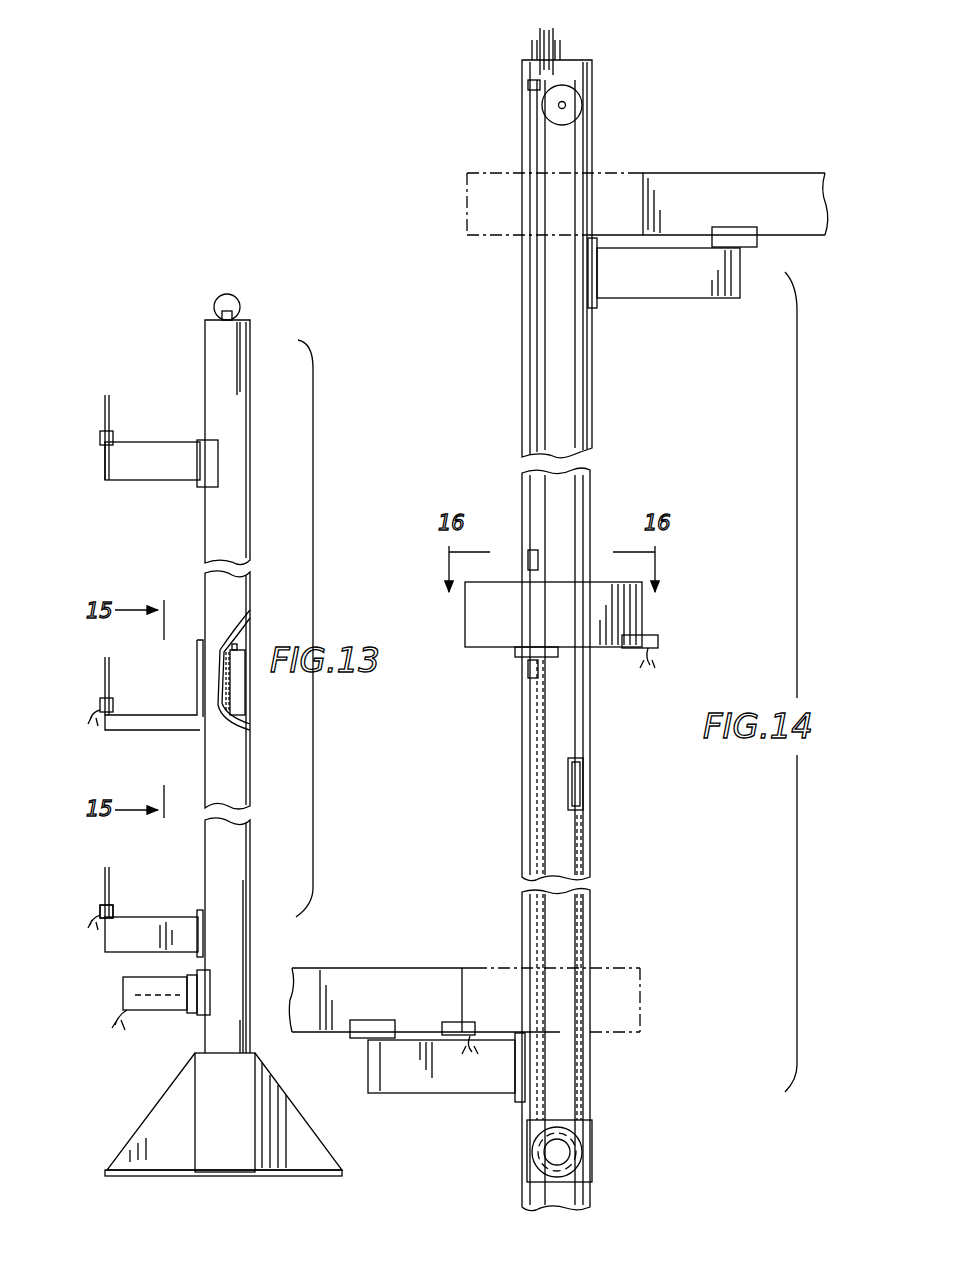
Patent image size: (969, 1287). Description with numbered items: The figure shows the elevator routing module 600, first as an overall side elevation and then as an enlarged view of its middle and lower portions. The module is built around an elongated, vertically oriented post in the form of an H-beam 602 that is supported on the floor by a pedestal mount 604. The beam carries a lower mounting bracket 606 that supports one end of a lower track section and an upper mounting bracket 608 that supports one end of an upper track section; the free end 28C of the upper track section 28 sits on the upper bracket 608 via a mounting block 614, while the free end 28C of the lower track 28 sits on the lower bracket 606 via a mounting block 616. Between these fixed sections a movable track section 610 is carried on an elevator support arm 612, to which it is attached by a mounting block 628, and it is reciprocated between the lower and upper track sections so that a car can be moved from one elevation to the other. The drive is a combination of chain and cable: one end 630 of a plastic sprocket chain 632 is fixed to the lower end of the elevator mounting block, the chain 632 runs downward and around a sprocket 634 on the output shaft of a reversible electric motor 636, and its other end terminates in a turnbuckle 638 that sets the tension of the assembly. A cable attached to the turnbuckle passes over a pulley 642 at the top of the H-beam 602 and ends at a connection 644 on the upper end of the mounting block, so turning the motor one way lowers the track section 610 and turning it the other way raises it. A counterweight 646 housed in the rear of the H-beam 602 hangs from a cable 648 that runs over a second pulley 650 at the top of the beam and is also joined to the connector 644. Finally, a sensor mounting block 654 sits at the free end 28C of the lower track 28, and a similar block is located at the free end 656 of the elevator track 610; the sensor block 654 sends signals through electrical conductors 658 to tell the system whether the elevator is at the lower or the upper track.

In FIG. 13, the track section 28 is at (108, 400).
In FIG. 14, the track section 28 is at (806, 212).
In FIG. 14, the free end of track section 28C is at (657, 177).
In FIG. 13, the elevator routing module 600 is at (266, 446).
In FIG. 13, the H-beam 602 is at (252, 500).
In FIG. 14, the H-beam 602 is at (592, 480).
In FIG. 13, the pedestal mount 604 is at (300, 1168).
In FIG. 13, the lower mounting bracket 606 is at (190, 915).
In FIG. 14, the lower mounting bracket 606 is at (402, 1080).
In FIG. 13, the upper mounting bracket 608 is at (165, 447).
In FIG. 14, the upper mounting bracket 608 is at (686, 288).
In FIG. 13, the movable track section 610 is at (135, 650).
In FIG. 14, the movable track section 610 is at (640, 170).
In FIG. 13, the elevator support arm 612 is at (163, 730).
In FIG. 14, the mounting block 614 is at (756, 206).
In FIG. 13, the mounting block 616 is at (160, 893).
In FIG. 14, the mounting block 616 is at (362, 1032).
In FIG. 13, the mounting block 628 is at (110, 703).
In FIG. 14, the mounting block 628 is at (528, 652).
In FIG. 14, the end of sprocket chain 630 is at (530, 672).
In FIG. 14, the sprocket chain 632 is at (548, 738).
In FIG. 14, the sprocket 634 is at (586, 1146).
In FIG. 13, the reversible electric motor 636 is at (148, 1003).
In FIG. 14, the reversible electric motor 636 is at (588, 1178).
In FIG. 14, the turnbuckle 638 is at (585, 800).
In FIG. 14, the pulley 642 is at (578, 100).
In FIG. 14, the connection 644 is at (556, 582).
In FIG. 13, the counterweight 646 is at (245, 702).
In FIG. 13, the cable 648 is at (250, 640).
In FIG. 14, the cable 648 is at (540, 90).
In FIG. 13, the pulley 650 is at (236, 306).
In FIG. 14, the pulley 650 is at (553, 50).
In FIG. 14, the sensor mounting block 654 is at (660, 644).
In FIG. 14, the free end of elevator track 656 is at (643, 610).
In FIG. 14, the electrical conductors 658 is at (660, 662).